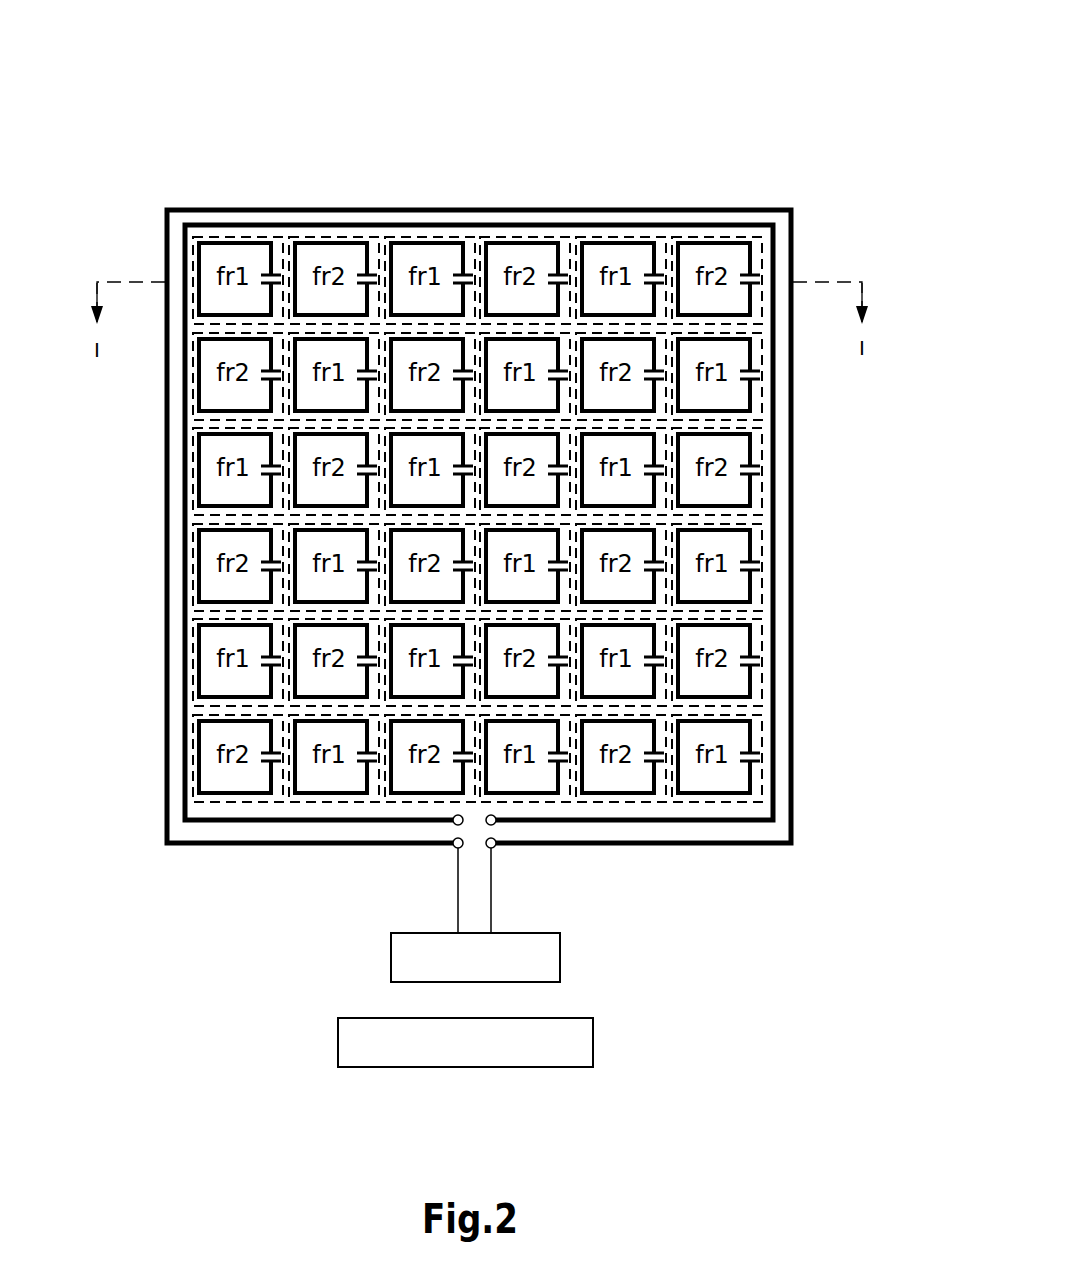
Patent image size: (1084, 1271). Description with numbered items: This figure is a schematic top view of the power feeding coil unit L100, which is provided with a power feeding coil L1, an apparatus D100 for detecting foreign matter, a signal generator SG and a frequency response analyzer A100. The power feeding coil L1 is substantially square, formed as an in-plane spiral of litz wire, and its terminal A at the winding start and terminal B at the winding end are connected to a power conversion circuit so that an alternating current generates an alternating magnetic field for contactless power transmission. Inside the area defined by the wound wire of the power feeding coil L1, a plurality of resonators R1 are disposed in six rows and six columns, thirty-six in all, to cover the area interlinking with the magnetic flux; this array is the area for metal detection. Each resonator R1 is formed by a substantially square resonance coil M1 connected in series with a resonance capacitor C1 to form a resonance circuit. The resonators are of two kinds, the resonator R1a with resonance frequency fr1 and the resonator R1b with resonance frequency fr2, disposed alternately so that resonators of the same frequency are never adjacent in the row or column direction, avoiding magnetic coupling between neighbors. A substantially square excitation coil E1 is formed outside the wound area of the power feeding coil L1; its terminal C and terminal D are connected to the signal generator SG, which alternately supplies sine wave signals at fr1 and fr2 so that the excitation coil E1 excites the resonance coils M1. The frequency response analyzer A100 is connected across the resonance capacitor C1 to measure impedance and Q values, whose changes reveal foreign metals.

The apparatus for detecting foreign matter D100 is at (923, 65).
The excitation coil E1 is at (793, 263).
The power feeding coil L1 is at (773, 768).
The resonator R1 is at (802, 130).
The resonator R1a is at (240, 237).
The resonator R1b is at (336, 237).
The resonance coil M1 is at (218, 242).
The resonance capacitor C1 is at (266, 274).
The terminal A is at (455, 824).
The terminal B is at (494, 824).
The terminal C is at (455, 847).
The terminal D is at (494, 847).
The signal generator SG is at (560, 961).
The frequency response analyzer A100 is at (593, 1045).
The power feeding coil unit L100 is at (473, 1134).